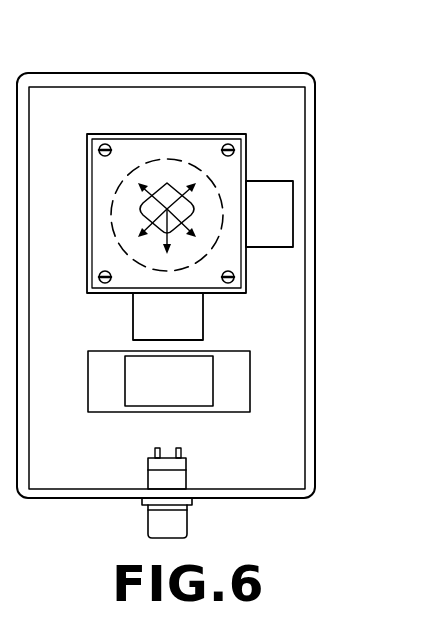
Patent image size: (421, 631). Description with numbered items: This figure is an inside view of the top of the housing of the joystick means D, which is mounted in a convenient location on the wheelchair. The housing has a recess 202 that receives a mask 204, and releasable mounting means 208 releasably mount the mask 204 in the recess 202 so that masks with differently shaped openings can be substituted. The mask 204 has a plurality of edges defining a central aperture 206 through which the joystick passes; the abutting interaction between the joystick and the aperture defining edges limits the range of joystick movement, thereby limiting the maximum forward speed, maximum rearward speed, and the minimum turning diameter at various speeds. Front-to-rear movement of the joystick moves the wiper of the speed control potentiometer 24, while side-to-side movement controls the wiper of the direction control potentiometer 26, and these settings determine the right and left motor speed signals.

The joystick means D is at (113, 69).
The speed control potentiometer 24 is at (185, 308).
The direction control potentiometer 26 is at (280, 181).
The recess 202 is at (246, 273).
The mask 204 is at (108, 231).
The central aperture 206 is at (167, 192).
The releasable mounting means 208 is at (100, 285).